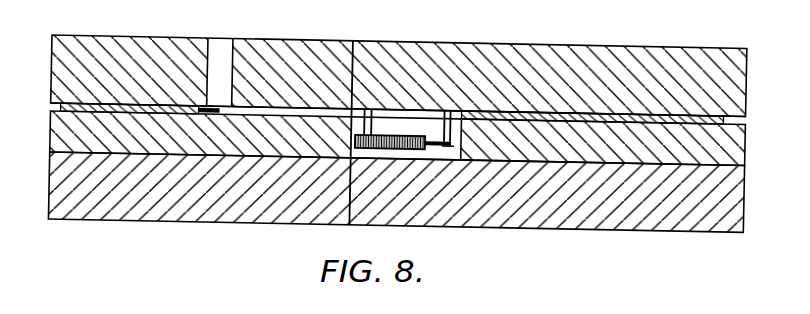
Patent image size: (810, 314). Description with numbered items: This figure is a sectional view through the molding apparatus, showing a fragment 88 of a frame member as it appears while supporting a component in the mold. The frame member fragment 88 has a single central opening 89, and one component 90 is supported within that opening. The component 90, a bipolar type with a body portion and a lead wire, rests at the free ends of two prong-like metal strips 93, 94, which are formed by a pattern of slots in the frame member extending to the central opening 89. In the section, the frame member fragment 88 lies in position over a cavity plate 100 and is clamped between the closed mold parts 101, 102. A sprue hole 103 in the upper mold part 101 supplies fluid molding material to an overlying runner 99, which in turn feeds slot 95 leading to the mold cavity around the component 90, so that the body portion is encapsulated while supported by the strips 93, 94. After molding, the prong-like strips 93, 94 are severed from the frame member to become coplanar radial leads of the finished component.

The fragment of a frame member 88 is at (62, 107).
The central opening 89 is at (453, 140).
The component 90 is at (390, 142).
The prong-like metal strip 93 is at (376, 104).
The prong-like metal strip 94 is at (453, 134).
The slot 95 is at (220, 109).
The runner 99 is at (208, 101).
The cavity plate 100 is at (57, 132).
The mold part 101 is at (52, 66).
The mold part 102 is at (53, 205).
The sprue hole 103 is at (222, 37).